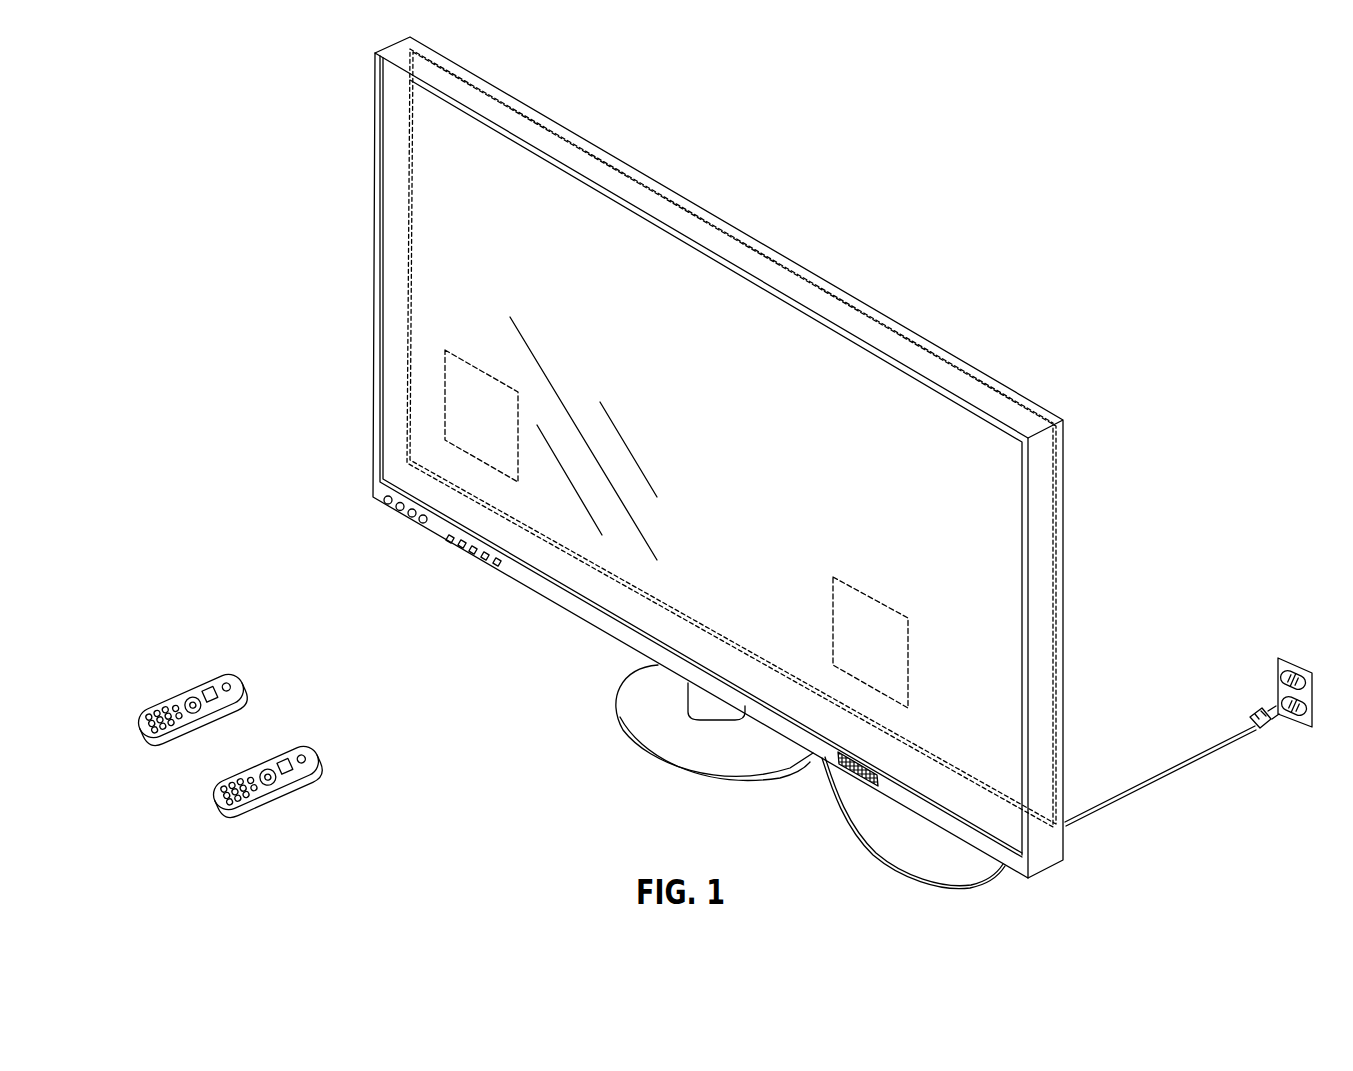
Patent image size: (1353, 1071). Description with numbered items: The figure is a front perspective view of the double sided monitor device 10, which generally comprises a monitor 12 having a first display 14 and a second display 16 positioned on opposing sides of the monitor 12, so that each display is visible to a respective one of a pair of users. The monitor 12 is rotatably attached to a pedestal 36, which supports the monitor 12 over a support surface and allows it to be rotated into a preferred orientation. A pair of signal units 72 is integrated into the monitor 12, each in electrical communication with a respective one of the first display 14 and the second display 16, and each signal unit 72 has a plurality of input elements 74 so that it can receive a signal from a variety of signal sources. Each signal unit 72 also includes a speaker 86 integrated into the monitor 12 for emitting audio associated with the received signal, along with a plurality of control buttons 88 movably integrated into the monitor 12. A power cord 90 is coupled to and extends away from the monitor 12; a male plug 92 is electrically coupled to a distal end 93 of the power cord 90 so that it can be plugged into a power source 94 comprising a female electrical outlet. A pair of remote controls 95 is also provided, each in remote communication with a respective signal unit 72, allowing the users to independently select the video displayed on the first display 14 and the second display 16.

The double sided monitor device 10 is at (238, 210).
The monitor 12 is at (392, 55).
The first display 14 is at (388, 355).
The second display 16 is at (408, 270).
The pedestal 36 is at (582, 727).
The signal unit 72 is at (460, 425).
The input elements 74 is at (486, 584).
The speaker 86 is at (840, 774).
The control buttons 88 is at (396, 542).
The power cord 90 is at (1152, 784).
The male plug 92 is at (1258, 713).
The distal end 93 is at (1263, 730).
The power source 94 is at (178, 705).
The remote controls 95 is at (1313, 698).